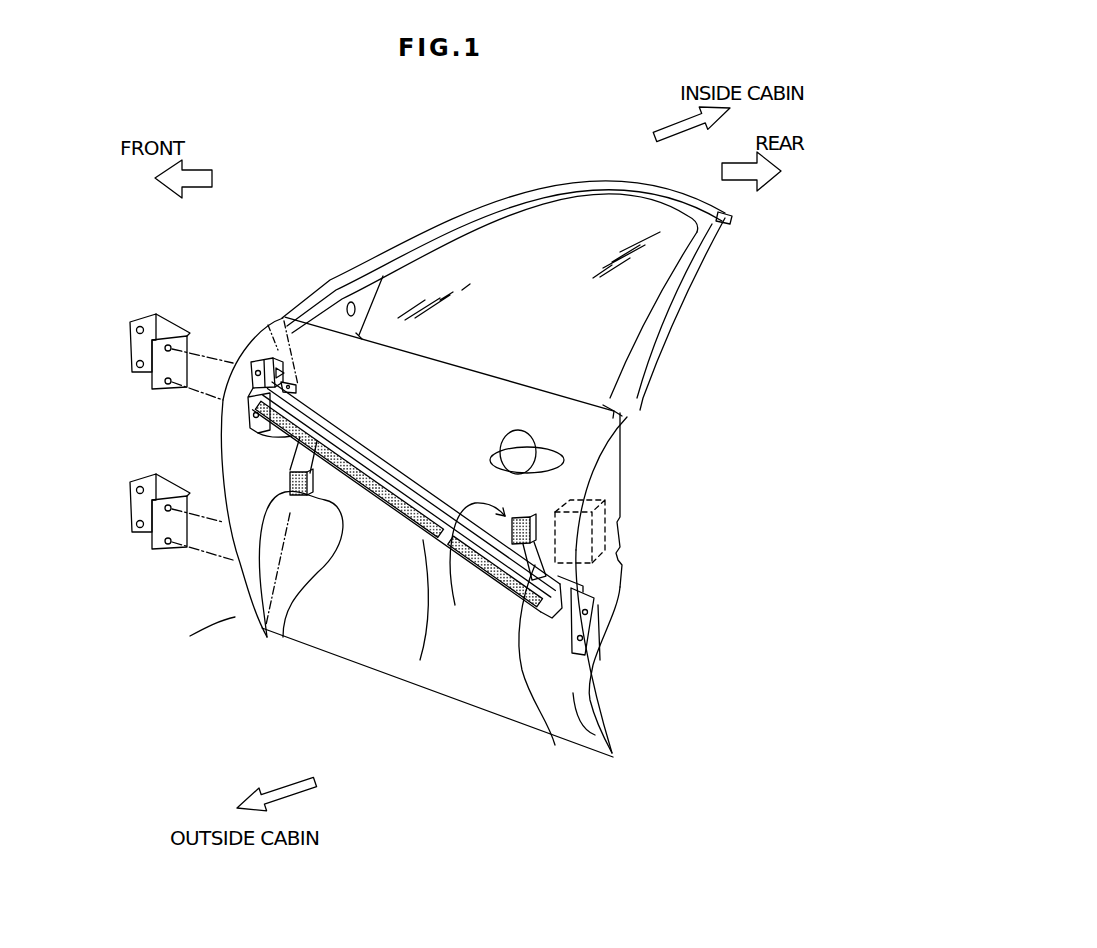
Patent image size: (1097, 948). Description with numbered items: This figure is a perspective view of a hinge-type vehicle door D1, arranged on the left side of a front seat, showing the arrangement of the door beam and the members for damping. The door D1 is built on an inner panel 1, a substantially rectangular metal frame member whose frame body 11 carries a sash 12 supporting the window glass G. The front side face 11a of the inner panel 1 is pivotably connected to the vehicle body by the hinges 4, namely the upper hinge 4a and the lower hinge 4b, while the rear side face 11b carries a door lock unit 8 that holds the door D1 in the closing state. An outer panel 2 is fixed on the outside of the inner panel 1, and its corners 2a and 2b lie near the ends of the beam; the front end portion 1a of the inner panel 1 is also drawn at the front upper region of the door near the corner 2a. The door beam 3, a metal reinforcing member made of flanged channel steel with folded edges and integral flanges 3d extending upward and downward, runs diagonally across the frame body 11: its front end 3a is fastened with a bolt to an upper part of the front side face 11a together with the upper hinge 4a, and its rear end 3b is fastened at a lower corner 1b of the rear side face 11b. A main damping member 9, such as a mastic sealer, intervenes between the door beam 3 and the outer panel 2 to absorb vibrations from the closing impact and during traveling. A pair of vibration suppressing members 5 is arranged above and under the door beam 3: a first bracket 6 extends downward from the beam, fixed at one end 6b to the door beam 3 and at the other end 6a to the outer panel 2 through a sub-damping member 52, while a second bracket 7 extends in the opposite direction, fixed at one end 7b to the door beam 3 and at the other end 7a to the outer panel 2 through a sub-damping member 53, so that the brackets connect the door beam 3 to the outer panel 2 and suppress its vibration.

The inner panel 1 is at (612, 452).
The front end of inner panel 1a is at (275, 320).
The lower corner of the rear end 1b is at (598, 607).
The outer panel 2 is at (595, 735).
The corner of the outer panel 2a is at (285, 318).
The corner of the outer panel 2b is at (603, 750).
The door beam 3 is at (600, 585).
The front end of the door beam 3a is at (255, 362).
The rear end of the door beam 3b is at (588, 605).
The flanges 3d is at (396, 467).
The hinges 4 is at (151, 315).
The upper hinge 4a is at (131, 353).
The lower hinge 4b is at (131, 513).
The vibration suppressing members 5 is at (420, 660).
The first bracket 6 is at (283, 639).
The other end of the first bracket 6a is at (323, 473).
The one end of the first bracket 6b is at (318, 432).
The second bracket 7 is at (552, 558).
The other end of the second bracket 7a is at (516, 517).
The one end of the second bracket 7b is at (512, 597).
The door lock unit 8 is at (607, 510).
The main damping member 9 is at (555, 745).
The frame body 11 is at (610, 573).
The front side face 11a is at (228, 435).
The rear side face 11b is at (603, 600).
The sash 12 is at (665, 313).
The sub-damping member 52 is at (253, 608).
The sub-damping member 53 is at (455, 605).
The window glass G is at (577, 238).
The door D1 is at (712, 268).